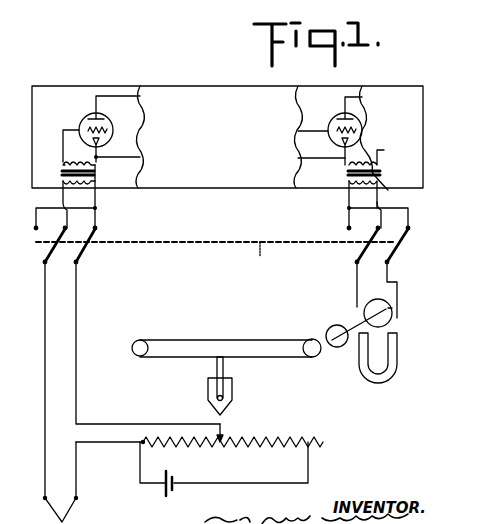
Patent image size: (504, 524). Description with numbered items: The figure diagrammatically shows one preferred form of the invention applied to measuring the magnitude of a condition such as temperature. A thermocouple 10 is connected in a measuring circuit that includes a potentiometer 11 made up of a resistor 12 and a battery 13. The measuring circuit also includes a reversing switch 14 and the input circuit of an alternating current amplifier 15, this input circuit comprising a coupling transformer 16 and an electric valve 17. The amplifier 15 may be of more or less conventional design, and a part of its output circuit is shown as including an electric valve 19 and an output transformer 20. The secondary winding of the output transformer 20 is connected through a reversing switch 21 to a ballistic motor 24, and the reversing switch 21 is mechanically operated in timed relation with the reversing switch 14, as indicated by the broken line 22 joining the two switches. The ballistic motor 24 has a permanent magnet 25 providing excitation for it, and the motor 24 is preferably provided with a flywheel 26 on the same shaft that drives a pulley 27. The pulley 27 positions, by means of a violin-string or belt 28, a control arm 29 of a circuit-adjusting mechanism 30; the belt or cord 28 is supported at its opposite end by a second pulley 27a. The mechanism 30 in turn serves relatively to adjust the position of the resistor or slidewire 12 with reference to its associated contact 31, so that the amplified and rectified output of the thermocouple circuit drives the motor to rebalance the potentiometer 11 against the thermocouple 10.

The thermocouple 10 is at (48, 516).
The potentiometer 11 is at (228, 473).
The resistor 12 is at (279, 434).
The battery 13 is at (171, 495).
The reversing switch 14 is at (44, 242).
The alternating current amplifier 15 is at (214, 182).
The coupling transformer 16 is at (93, 176).
The electric valve 17 is at (80, 121).
The electric valve 19 is at (332, 120).
The output transformer 20 is at (348, 176).
The reversing switch 21 is at (401, 255).
The broken line 22 is at (215, 254).
The ballistic motor 24 is at (392, 310).
The permanent magnet 25 is at (399, 358).
The flywheel 26 is at (327, 328).
The pulley 27 is at (317, 358).
The second pulley 27a is at (134, 352).
The belt 28 is at (200, 338).
The control arm 29 is at (225, 370).
The circuit-adjusting mechanism 30 is at (231, 400).
The contact 31 is at (229, 429).